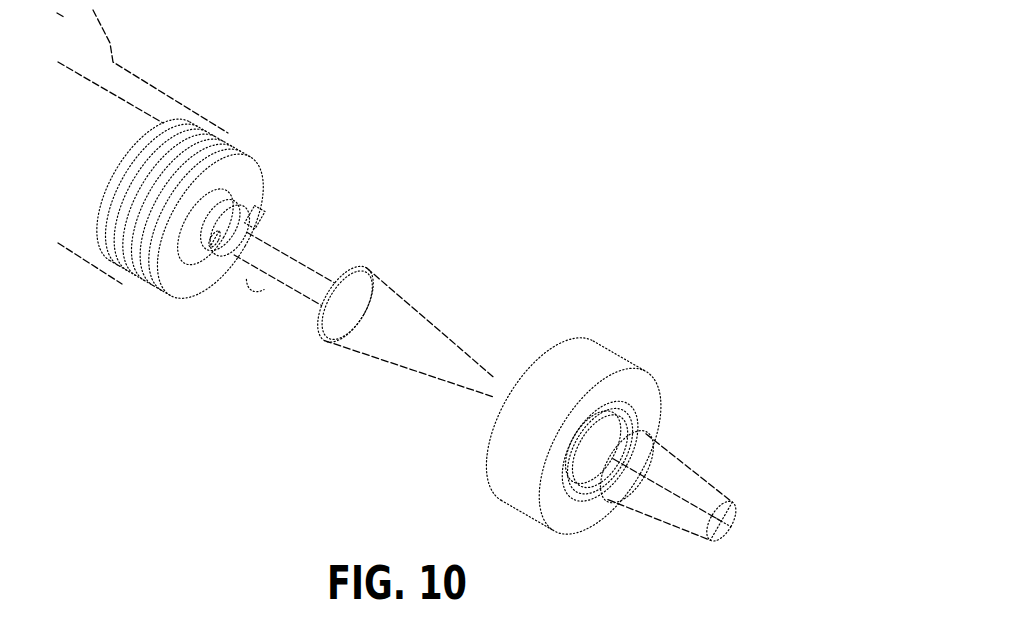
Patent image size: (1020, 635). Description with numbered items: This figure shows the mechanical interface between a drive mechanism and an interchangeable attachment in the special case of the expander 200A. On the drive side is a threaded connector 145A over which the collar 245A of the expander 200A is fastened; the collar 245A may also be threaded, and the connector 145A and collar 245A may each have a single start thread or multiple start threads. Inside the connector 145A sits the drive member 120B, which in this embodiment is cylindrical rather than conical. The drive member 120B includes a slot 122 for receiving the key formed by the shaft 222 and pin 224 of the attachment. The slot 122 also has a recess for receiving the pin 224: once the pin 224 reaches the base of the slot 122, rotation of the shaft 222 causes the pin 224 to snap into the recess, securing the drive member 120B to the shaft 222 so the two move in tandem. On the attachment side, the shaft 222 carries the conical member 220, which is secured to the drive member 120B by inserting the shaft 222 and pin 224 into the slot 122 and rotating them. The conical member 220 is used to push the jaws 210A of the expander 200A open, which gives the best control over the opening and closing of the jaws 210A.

The threaded connector 145A is at (235, 157).
The drive member 120B is at (240, 194).
The slot 122 is at (218, 240).
The pin 224 is at (260, 225).
The shaft 222 is at (277, 283).
The conical member 220 is at (420, 309).
The collar 245A is at (600, 354).
The jaws 210A is at (678, 467).
The expander 200A is at (669, 404).